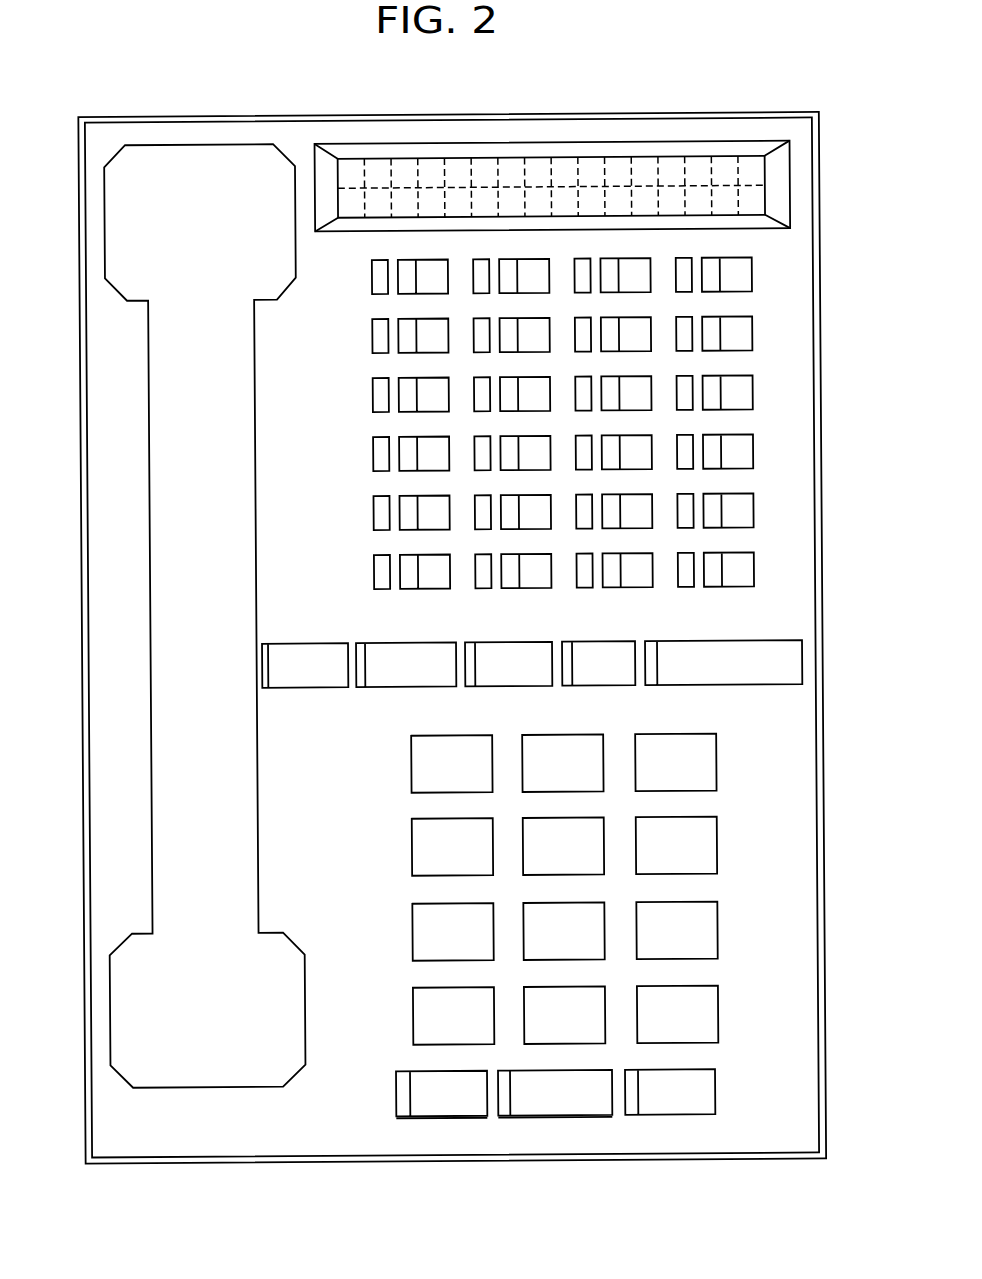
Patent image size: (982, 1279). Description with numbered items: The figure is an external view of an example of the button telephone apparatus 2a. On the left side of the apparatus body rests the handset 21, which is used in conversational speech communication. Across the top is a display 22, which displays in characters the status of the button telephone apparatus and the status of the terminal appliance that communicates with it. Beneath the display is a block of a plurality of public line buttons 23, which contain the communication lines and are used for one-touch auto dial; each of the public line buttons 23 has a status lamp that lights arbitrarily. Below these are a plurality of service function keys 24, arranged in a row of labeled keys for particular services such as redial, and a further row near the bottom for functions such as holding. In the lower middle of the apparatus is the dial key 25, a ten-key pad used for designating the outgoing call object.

The button telephone apparatus 2a is at (402, 114).
The handset 21 is at (257, 448).
The display 22 is at (605, 143).
The public line buttons 23 is at (775, 382).
The service function keys 24 is at (802, 670).
The dial key 25 is at (756, 864).